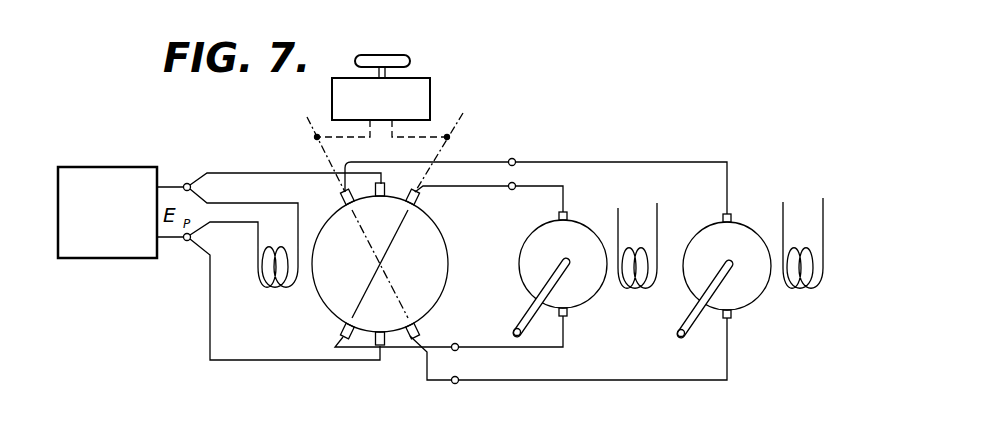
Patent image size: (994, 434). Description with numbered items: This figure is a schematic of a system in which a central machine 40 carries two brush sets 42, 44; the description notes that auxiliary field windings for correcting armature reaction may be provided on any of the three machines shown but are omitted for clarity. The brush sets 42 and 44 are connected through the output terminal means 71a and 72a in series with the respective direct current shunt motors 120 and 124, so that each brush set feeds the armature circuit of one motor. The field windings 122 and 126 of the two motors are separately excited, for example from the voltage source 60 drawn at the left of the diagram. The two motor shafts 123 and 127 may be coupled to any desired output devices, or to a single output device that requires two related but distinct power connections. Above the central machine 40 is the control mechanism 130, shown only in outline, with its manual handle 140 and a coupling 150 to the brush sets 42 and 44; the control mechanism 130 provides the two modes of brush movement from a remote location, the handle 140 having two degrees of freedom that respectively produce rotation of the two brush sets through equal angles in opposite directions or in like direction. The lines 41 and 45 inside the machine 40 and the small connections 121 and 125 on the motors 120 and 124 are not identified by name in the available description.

The voltage source 60 is at (117, 166).
The manual handle 140 is at (404, 55).
The control mechanism 130 is at (436, 84).
The coupling 150 is at (444, 122).
The output terminal means 71a is at (523, 153).
The rotary selector switch 40 is at (386, 188).
The movable contact arm 45 is at (364, 290).
The movable contact arm 41 is at (396, 292).
The brush set 44 is at (336, 327).
The brush set 42 is at (421, 329).
The switch terminal 121 is at (571, 214).
The switch terminal 125 is at (720, 215).
The direct current shunt motor 120 is at (588, 310).
The direct current shunt motor 124 is at (755, 313).
The field winding 122 is at (626, 293).
The field winding 126 is at (800, 296).
The motor shaft 123 is at (528, 312).
The motor shaft 127 is at (698, 324).
The output terminal means 72a is at (455, 388).